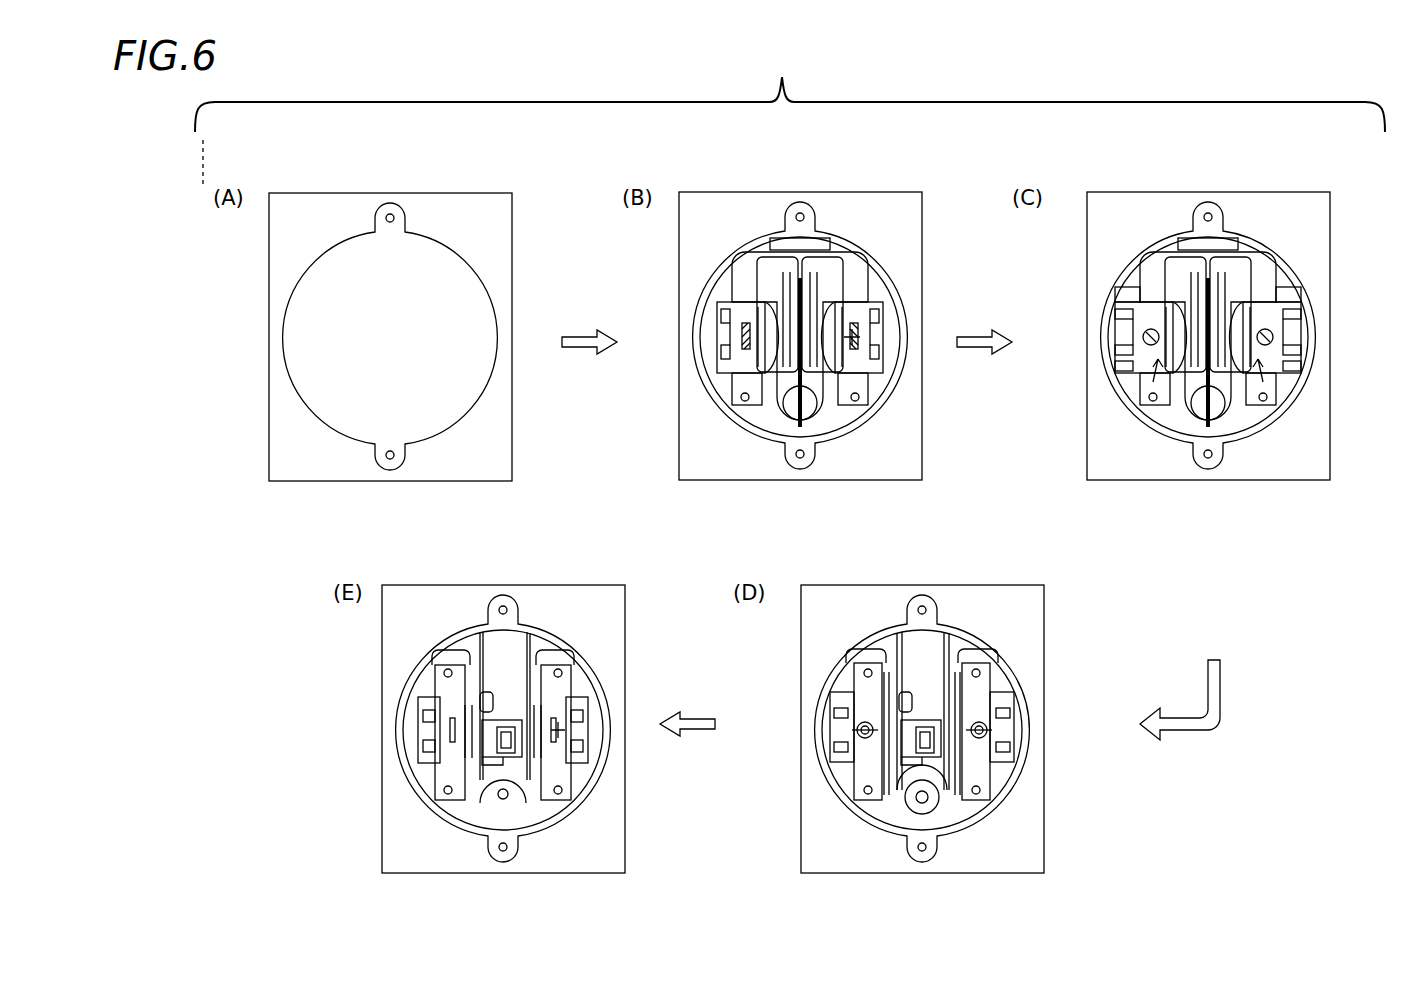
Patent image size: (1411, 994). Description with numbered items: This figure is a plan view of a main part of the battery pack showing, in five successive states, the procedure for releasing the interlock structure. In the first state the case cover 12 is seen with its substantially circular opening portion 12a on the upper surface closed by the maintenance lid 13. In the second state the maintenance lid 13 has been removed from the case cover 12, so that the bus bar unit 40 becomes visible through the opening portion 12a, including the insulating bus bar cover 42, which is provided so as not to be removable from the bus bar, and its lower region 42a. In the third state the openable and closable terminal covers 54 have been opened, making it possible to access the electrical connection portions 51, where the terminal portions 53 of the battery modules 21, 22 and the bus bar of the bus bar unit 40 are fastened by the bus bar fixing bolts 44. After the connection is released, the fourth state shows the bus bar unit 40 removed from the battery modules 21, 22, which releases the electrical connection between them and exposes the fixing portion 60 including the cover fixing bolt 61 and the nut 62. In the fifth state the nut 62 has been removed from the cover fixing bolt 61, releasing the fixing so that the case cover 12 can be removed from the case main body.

The case cover 12 is at (799, 507).
The opening portion 12a is at (810, 501).
The maintenance lid 13 is at (427, 336).
The battery module 21 is at (855, 533).
The battery module 22 is at (843, 513).
The bus bar unit 40 is at (1004, 284).
The bus bar cover 42 is at (1004, 256).
The housing bottom opening 42a is at (992, 456).
The bus bar fixing bolt 44 is at (1205, 348).
The electrical connection portion 51 is at (1201, 395).
The terminal portion 53 is at (925, 749).
The terminal cover 54 is at (858, 531).
The fixing portion 60 is at (946, 837).
The cover fixing bolt 61 is at (695, 845).
The nut 62 is at (913, 845).